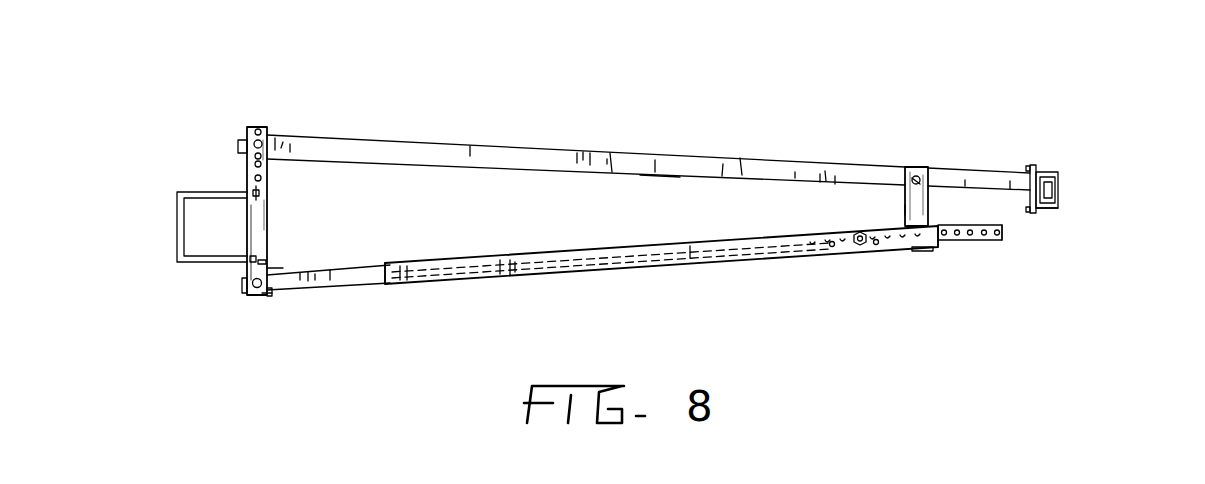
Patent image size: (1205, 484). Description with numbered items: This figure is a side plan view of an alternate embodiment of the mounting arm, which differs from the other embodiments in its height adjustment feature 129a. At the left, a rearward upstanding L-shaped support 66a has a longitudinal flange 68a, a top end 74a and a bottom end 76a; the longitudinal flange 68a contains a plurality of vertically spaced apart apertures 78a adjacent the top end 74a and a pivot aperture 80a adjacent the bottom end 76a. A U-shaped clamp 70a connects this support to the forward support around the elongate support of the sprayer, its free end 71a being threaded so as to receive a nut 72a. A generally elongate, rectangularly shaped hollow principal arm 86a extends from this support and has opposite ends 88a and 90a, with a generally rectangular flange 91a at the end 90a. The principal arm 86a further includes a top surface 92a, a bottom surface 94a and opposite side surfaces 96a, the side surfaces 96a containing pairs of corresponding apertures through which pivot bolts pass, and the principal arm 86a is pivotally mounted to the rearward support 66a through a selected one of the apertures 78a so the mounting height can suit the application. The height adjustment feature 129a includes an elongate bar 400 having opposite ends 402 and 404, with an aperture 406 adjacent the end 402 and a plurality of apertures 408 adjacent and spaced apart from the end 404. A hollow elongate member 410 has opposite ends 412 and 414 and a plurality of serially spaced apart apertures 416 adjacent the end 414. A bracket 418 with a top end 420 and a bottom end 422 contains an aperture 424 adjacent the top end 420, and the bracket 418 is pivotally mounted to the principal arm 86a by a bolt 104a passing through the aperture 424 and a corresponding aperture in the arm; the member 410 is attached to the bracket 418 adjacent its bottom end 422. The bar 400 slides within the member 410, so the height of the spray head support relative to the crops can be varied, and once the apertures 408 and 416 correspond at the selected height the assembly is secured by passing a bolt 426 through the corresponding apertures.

The rearward upstanding L-shaped support 66a is at (268, 182).
The longitudinal flange 68a is at (278, 264).
The U-shaped clamp 70a is at (193, 257).
The free end 71a is at (268, 258).
The nut 72a is at (257, 262).
The top end 74a is at (256, 127).
The bottom end 76a is at (267, 295).
The vertically spaced apart apertures 78a is at (254, 166).
The pivot aperture 80a is at (267, 293).
The principal arm 86a is at (530, 157).
The end 88a is at (238, 147).
The end 90a is at (1033, 170).
The rectangular flange 91a is at (1040, 208).
The top surface 92a is at (625, 153).
The bottom surface 94a is at (657, 172).
The side surface 96a is at (737, 168).
The bolt 104a is at (918, 173).
The height adjustment feature 129a is at (1050, 273).
The elongate bar 400 is at (363, 287).
The end 402 is at (242, 284).
The end 404 is at (1003, 232).
The aperture 406 is at (258, 295).
The apertures 408 is at (984, 241).
The hollow elongate member 410 is at (587, 272).
The end 412 is at (378, 258).
The end 414 is at (940, 224).
The serially spaced apart apertures 416 is at (876, 247).
The bracket 418 is at (903, 212).
The top end 420 is at (912, 165).
The bottom end 422 is at (920, 252).
The aperture 424 is at (920, 182).
The bolt 426 is at (858, 232).